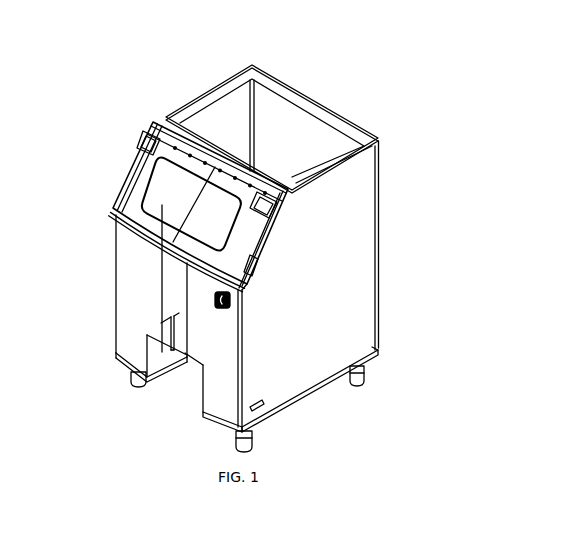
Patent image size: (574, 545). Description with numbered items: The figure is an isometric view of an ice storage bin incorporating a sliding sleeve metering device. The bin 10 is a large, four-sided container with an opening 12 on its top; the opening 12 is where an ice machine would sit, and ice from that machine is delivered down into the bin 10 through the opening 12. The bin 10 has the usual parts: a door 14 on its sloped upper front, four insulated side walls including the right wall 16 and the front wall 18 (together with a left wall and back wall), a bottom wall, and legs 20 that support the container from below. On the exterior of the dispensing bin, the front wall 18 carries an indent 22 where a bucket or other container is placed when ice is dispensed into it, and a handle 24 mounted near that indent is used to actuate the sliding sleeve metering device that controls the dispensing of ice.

The bin 10 is at (367, 127).
The opening 12 is at (198, 75).
The door 14 is at (172, 186).
The right wall 16 is at (359, 218).
The front wall 18 is at (142, 258).
The legs 20 is at (363, 368).
The indent 22 is at (167, 383).
The handle 24 is at (158, 322).